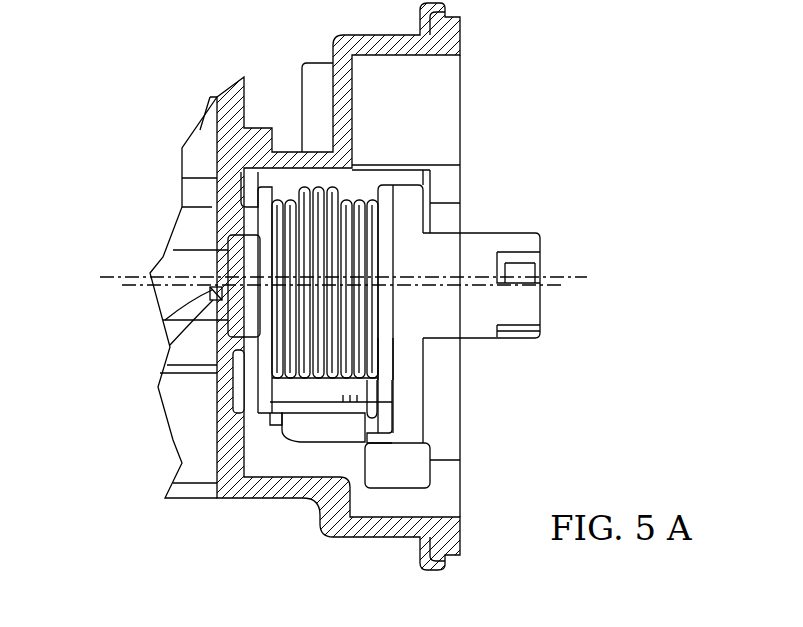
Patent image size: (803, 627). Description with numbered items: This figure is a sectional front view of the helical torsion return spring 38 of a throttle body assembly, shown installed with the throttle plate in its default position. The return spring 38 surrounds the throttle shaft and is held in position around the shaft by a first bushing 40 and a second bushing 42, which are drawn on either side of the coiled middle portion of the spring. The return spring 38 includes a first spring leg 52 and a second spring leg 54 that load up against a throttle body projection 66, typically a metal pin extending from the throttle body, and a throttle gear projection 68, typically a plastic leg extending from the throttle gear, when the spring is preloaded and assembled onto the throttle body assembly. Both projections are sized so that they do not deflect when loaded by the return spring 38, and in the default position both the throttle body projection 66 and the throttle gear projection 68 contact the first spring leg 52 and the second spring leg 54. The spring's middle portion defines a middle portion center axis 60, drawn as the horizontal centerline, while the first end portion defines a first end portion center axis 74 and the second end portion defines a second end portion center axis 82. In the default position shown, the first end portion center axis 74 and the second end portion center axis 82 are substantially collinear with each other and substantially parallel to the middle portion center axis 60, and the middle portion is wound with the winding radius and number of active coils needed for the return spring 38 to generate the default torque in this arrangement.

The helical torsion return spring 38 is at (299, 171).
The first bushing 40 is at (250, 180).
The second bushing 42 is at (383, 187).
The first spring leg 52 is at (275, 407).
The second spring leg 54 is at (375, 400).
The middle portion center axis 60 is at (575, 277).
The throttle body projection 66 is at (300, 383).
The throttle gear projection 68 is at (330, 410).
The first end portion center axis 74 is at (119, 297).
The second end portion center axis 82 is at (137, 284).